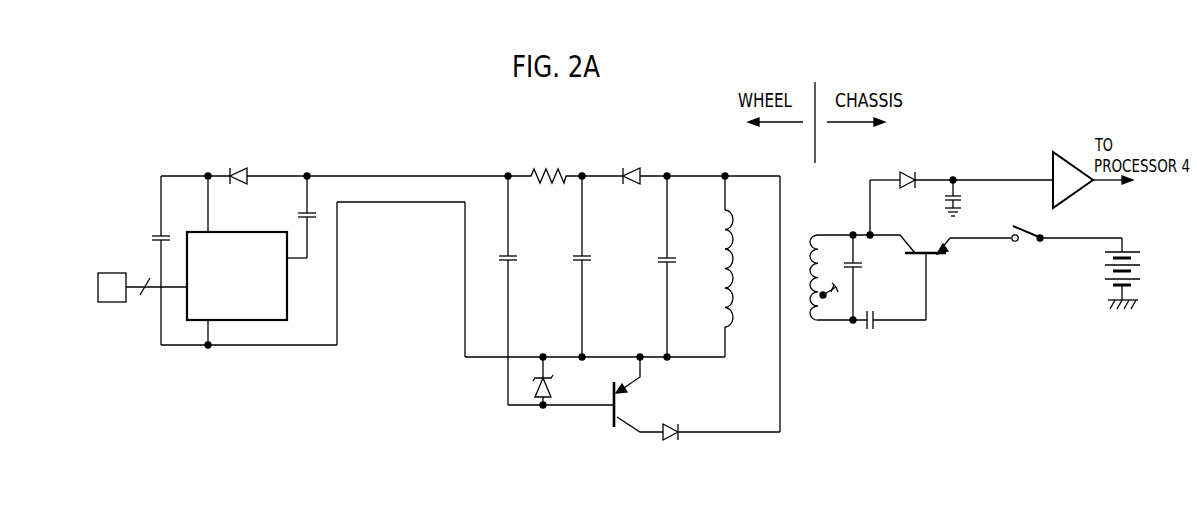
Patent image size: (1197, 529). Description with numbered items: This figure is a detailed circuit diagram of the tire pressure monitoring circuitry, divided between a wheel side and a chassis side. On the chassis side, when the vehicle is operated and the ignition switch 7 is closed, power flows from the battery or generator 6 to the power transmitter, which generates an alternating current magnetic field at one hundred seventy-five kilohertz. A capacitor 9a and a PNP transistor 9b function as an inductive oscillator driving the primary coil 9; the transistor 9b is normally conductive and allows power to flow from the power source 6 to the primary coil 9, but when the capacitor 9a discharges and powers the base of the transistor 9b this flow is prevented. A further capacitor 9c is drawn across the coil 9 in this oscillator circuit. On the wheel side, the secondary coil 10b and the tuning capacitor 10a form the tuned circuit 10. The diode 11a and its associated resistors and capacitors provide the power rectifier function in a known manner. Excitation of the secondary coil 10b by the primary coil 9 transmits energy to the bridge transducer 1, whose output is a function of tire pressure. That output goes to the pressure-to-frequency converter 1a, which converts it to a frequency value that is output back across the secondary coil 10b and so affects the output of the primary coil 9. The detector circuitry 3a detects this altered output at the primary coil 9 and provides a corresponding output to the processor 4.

The transducer 1 is at (117, 306).
The pressure-to-frequency converter 1a is at (287, 280).
The processor 4 is at (146, 295).
The diode 11a is at (642, 167).
The tuned circuit 10 is at (713, 244).
The tuning capacitor 10a is at (679, 263).
The secondary coil 10b is at (736, 265).
The primary coil 9 is at (814, 290).
The capacitor 9a is at (868, 332).
The PNP transistor 9b is at (935, 256).
The capacitor 9c is at (859, 270).
The detector circuitry 3a is at (973, 157).
The ignition switch 7 is at (1023, 248).
The battery or generator 6 is at (1105, 270).